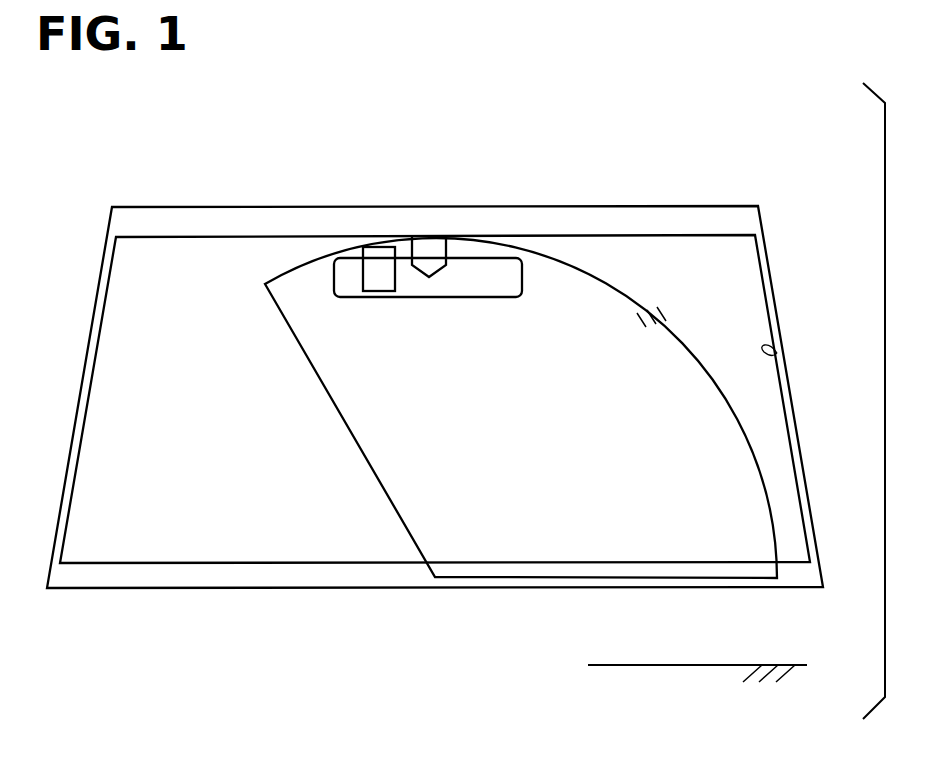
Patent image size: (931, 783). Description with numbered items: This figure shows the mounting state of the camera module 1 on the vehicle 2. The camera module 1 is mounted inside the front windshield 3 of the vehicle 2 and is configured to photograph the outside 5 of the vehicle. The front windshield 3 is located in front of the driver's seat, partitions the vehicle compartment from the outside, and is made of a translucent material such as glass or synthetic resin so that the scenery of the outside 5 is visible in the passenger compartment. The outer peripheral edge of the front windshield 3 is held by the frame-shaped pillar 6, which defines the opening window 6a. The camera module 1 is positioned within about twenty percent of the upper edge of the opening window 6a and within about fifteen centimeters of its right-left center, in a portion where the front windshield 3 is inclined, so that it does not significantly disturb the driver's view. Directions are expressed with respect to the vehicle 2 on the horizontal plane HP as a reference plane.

The camera module 1 is at (355, 284).
The vehicle 2 is at (128, 203).
The front windshield 3 is at (772, 390).
The outside of the vehicle 5 is at (257, 104).
The pillar 6 is at (733, 217).
The opening window 6a is at (777, 353).
The horizontal plane HP is at (788, 665).